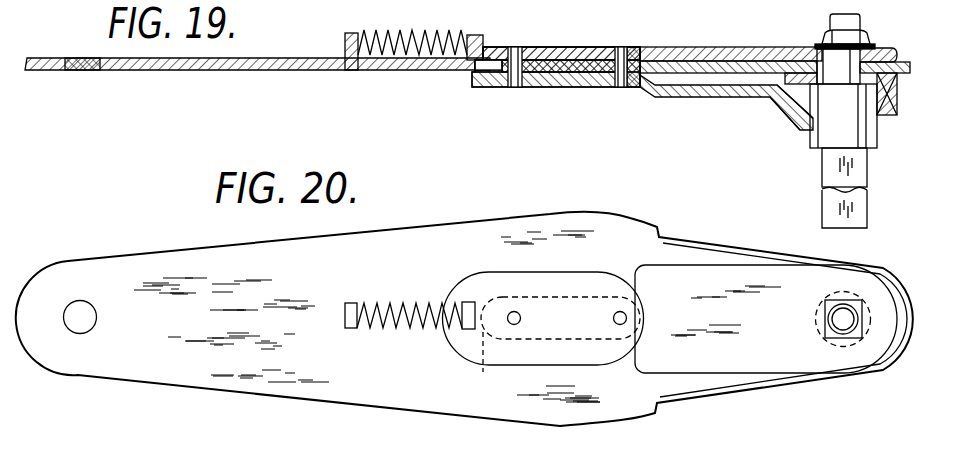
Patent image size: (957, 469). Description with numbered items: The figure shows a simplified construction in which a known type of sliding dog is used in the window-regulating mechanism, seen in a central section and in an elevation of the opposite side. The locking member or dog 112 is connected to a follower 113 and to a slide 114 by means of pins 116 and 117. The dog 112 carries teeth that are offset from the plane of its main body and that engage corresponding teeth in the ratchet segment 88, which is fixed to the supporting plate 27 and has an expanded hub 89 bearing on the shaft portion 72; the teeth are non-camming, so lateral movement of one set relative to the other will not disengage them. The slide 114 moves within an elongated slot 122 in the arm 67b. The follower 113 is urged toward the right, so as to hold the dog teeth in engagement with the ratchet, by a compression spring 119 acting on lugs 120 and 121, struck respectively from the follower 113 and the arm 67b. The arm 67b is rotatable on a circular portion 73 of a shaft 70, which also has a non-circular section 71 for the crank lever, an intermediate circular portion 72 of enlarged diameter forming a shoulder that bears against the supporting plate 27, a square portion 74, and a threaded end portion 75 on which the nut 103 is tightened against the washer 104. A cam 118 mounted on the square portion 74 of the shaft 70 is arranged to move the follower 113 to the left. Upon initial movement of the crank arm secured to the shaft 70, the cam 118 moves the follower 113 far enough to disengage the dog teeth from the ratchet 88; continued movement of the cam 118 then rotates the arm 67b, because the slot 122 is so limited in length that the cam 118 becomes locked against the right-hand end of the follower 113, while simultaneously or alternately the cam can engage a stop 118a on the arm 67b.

In FIG. 19, the arm 67b is at (267, 59).
In FIG. 20, the arm 67b is at (482, 221).
In FIG. 19, the lug 121 is at (347, 44).
In FIG. 20, the lug 121 is at (349, 302).
In FIG. 19, the compression spring 119 is at (386, 35).
In FIG. 20, the compression spring 119 is at (402, 308).
In FIG. 19, the lug 120 is at (467, 36).
In FIG. 20, the lug 120 is at (463, 331).
In FIG. 19, the elongated slot 122 is at (488, 60).
In FIG. 20, the elongated slot 122 is at (481, 361).
In FIG. 19, the pin 116 is at (513, 48).
In FIG. 20, the pin 116 is at (515, 325).
In FIG. 19, the follower 113 is at (562, 50).
In FIG. 20, the follower 113 is at (486, 276).
In FIG. 19, the pin 117 is at (622, 47).
In FIG. 20, the pin 117 is at (618, 325).
In FIG. 19, the slide 114 is at (497, 88).
In FIG. 20, the slide 114 is at (592, 305).
In FIG. 19, the locking member or dog 112 is at (540, 88).
In FIG. 19, the cam 118 is at (726, 50).
In FIG. 20, the cam 118 is at (758, 364).
In FIG. 20, the stop 118a is at (728, 246).
In FIG. 19, the ratchet segment 88 is at (704, 96).
In FIG. 19, the expanded hub 89 is at (797, 114).
In FIG. 19, the nut 103 is at (824, 38).
In FIG. 19, the threaded end portion 75 is at (862, 26).
In FIG. 19, the washer 104 is at (874, 46).
In FIG. 19, the square portion 74 is at (898, 50).
In FIG. 20, the square portion 74 is at (821, 322).
In FIG. 19, the supporting plate 27 is at (912, 66).
In FIG. 19, the circular portion 73 is at (893, 107).
In FIG. 19, the intermediate circular portion 72 is at (852, 132).
In FIG. 19, the non-circular section 71 is at (827, 200).
In FIG. 19, the shaft 70 is at (875, 181).